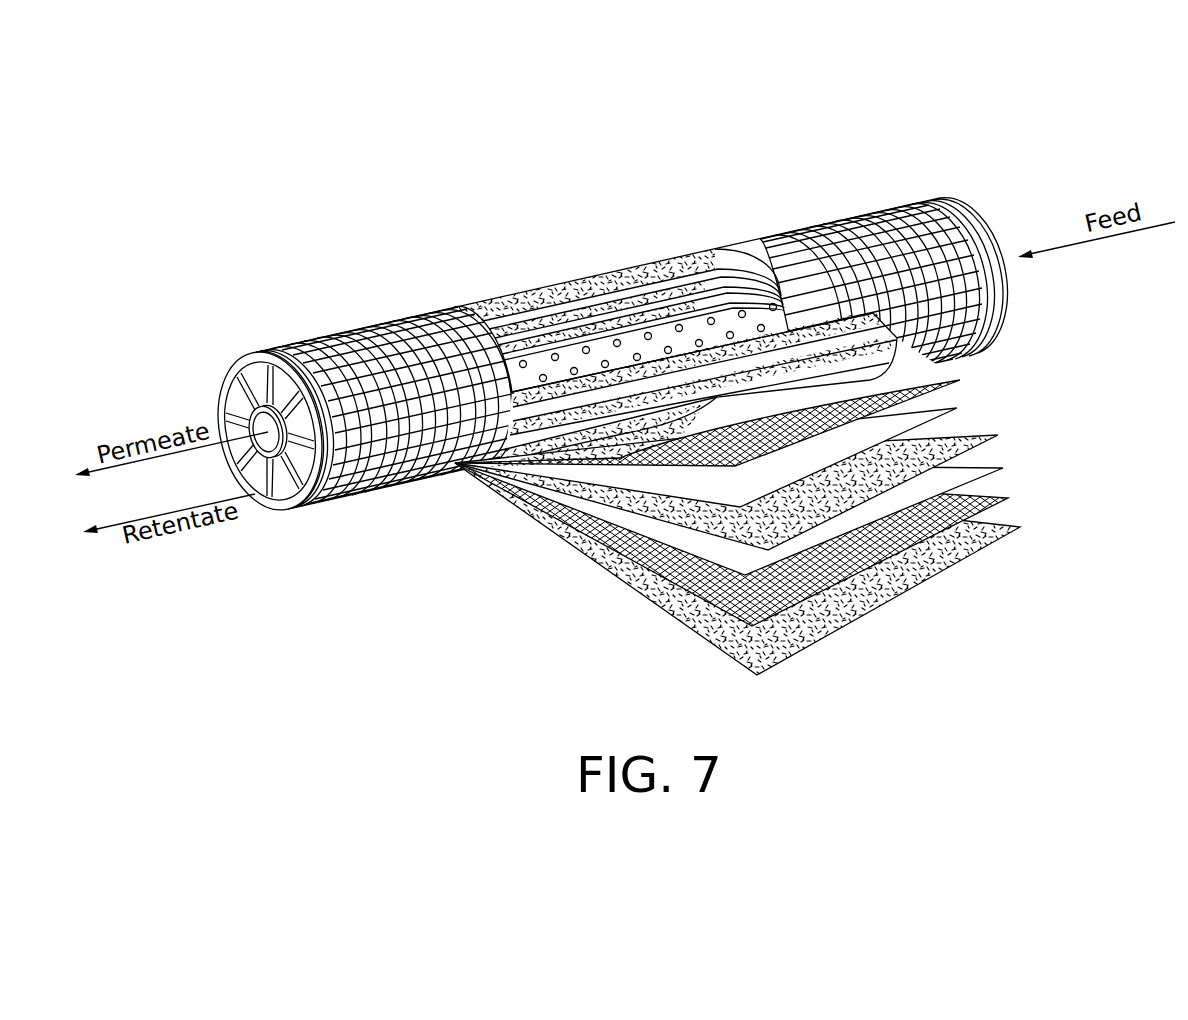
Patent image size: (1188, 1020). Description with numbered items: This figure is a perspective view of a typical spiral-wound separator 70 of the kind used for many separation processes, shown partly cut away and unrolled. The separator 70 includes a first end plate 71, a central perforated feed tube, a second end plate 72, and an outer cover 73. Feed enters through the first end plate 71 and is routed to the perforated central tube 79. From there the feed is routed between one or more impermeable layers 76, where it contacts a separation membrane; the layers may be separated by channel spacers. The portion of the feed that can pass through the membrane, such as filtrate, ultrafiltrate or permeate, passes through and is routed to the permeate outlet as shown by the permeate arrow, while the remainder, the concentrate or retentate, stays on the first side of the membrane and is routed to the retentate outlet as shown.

The spiral-wound separator 70 is at (643, 431).
The first end plate 71 is at (990, 214).
The second end plate 72 is at (269, 508).
The outer cover 73 is at (1020, 527).
The impermeable layer 76 is at (998, 435).
The perforated central tube 79 is at (632, 334).